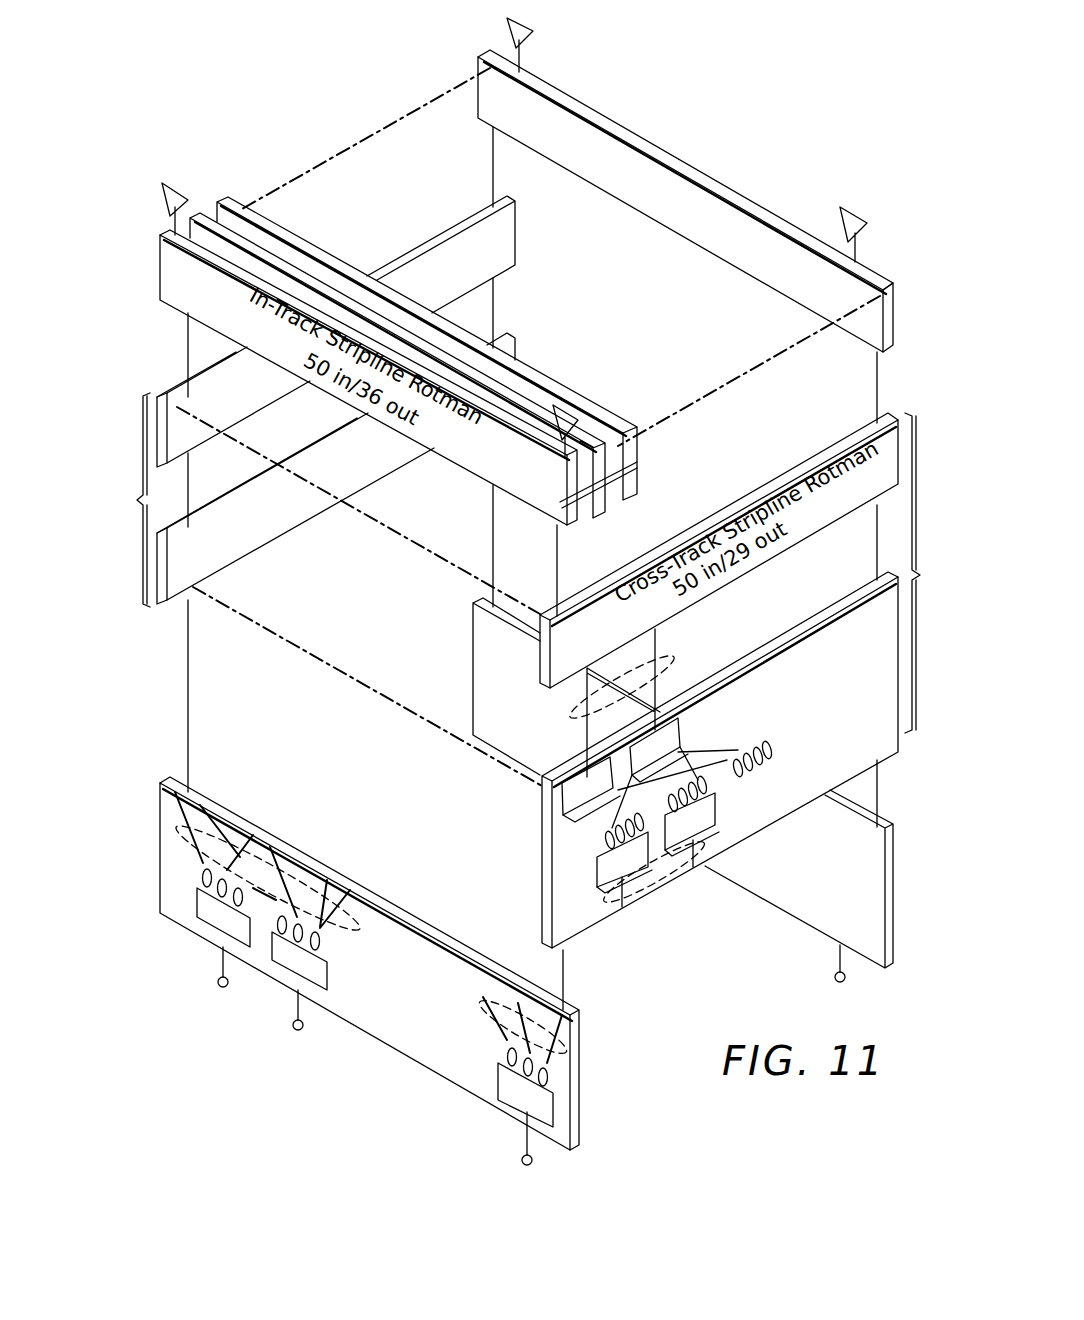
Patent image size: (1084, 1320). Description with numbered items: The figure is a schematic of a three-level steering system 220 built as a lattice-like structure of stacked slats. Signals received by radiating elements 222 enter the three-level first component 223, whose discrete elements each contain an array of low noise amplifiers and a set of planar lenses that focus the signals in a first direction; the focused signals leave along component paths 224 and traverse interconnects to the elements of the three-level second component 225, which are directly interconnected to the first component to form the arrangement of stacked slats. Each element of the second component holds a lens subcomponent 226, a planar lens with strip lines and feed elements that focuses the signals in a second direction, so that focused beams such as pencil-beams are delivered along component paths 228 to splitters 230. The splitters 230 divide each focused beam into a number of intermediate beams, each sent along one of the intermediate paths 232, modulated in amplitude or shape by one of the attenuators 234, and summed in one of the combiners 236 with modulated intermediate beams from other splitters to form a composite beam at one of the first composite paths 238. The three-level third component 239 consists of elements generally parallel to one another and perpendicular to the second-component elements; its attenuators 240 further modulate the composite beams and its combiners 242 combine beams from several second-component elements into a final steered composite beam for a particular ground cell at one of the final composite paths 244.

The three-level steering system 220 is at (722, 82).
The radiating elements 222 is at (510, 37).
The three-level first component 223 is at (688, 236).
The component paths 224 is at (186, 331).
The three-level second component 225 is at (519, 487).
The lens subcomponent 226 is at (168, 394).
The component paths 228 is at (189, 490).
The splitters 230 is at (683, 727).
The intermediate paths 232 is at (728, 738).
The attenuators 234 is at (772, 751).
The combiners 236 is at (714, 806).
The first composite paths 238 is at (186, 700).
The three-level third component 239 is at (582, 1080).
The attenuators 240 is at (333, 957).
The combiners 242 is at (196, 905).
The final composite paths 244 is at (222, 970).